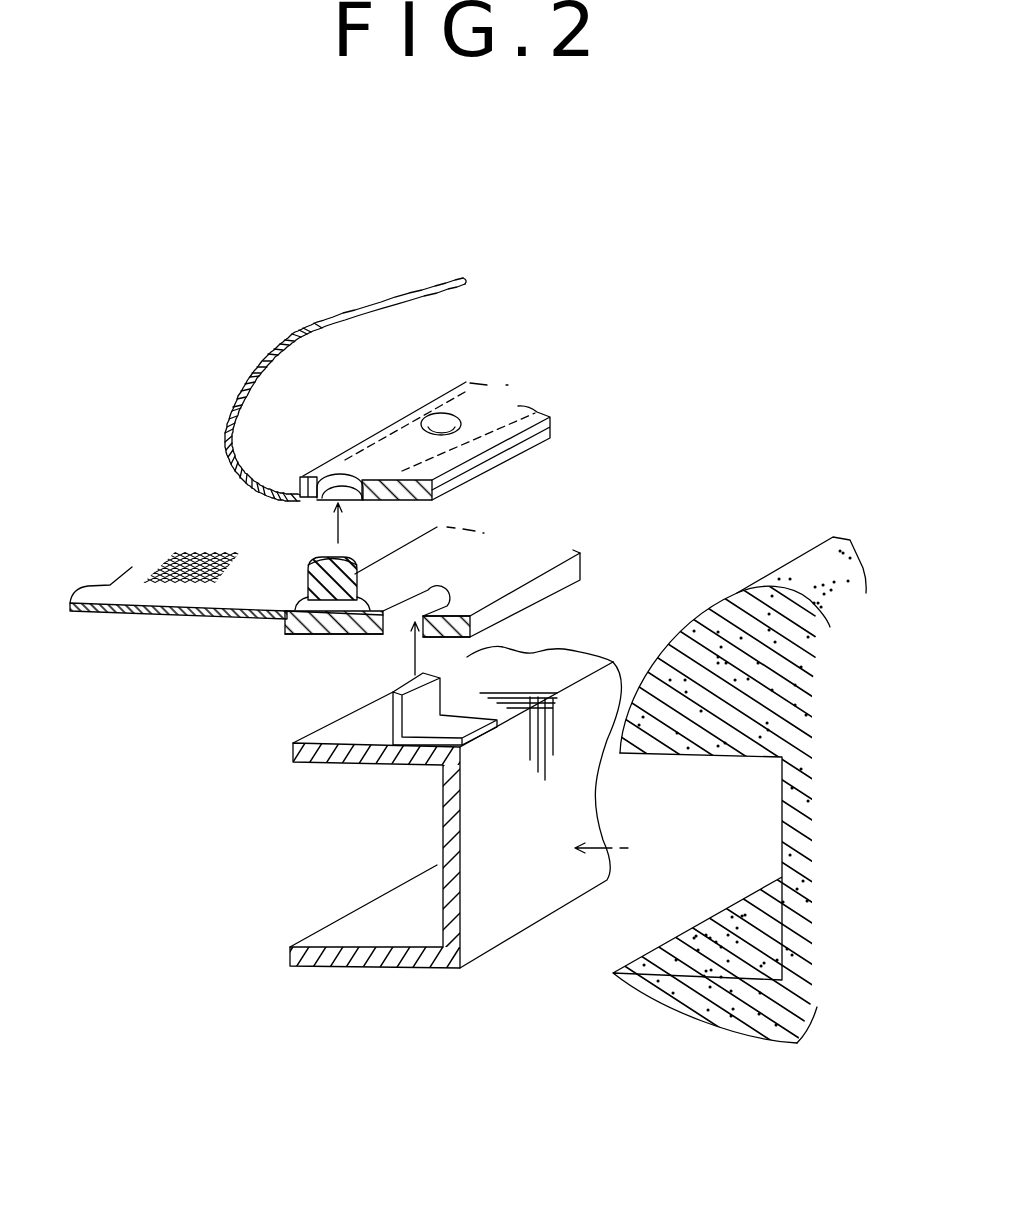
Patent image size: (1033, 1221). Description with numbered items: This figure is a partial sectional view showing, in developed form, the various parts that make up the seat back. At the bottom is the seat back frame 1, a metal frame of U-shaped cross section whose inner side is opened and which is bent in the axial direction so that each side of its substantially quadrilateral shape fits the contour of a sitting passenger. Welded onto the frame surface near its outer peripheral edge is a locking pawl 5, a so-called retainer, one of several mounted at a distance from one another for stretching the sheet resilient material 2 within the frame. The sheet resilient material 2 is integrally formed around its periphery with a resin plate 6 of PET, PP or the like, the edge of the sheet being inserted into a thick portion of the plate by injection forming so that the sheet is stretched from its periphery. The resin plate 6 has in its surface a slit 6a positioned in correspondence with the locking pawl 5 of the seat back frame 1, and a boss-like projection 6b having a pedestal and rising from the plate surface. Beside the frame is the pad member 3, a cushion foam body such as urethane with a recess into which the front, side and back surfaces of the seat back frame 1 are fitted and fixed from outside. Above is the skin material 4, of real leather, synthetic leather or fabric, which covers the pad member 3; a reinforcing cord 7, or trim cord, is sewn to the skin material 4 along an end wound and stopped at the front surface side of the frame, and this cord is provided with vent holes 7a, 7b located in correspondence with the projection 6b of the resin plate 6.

The seat back frame 1 is at (488, 915).
The sheet resilient material 2 is at (118, 592).
The pad member 3 is at (792, 567).
The skin material 4 is at (363, 302).
The locking pawl 5 is at (386, 720).
The resin plate 6 is at (540, 557).
The slit 6a is at (392, 622).
The boss-like projection 6b is at (323, 558).
The reinforcing cord 7 is at (487, 432).
The vent hole 7a is at (332, 478).
The vent hole 7b is at (438, 417).